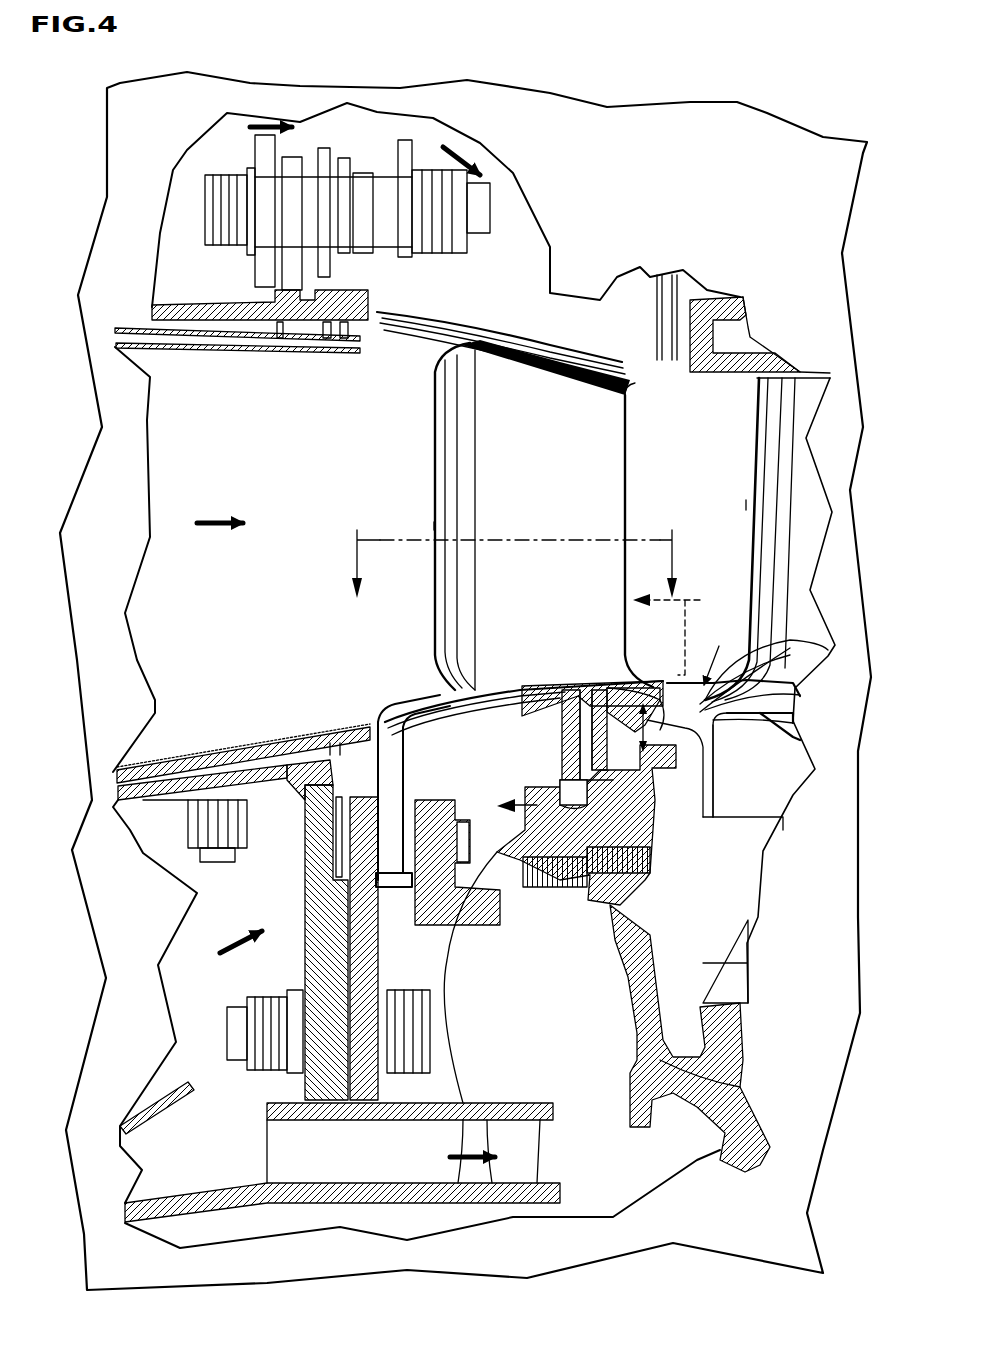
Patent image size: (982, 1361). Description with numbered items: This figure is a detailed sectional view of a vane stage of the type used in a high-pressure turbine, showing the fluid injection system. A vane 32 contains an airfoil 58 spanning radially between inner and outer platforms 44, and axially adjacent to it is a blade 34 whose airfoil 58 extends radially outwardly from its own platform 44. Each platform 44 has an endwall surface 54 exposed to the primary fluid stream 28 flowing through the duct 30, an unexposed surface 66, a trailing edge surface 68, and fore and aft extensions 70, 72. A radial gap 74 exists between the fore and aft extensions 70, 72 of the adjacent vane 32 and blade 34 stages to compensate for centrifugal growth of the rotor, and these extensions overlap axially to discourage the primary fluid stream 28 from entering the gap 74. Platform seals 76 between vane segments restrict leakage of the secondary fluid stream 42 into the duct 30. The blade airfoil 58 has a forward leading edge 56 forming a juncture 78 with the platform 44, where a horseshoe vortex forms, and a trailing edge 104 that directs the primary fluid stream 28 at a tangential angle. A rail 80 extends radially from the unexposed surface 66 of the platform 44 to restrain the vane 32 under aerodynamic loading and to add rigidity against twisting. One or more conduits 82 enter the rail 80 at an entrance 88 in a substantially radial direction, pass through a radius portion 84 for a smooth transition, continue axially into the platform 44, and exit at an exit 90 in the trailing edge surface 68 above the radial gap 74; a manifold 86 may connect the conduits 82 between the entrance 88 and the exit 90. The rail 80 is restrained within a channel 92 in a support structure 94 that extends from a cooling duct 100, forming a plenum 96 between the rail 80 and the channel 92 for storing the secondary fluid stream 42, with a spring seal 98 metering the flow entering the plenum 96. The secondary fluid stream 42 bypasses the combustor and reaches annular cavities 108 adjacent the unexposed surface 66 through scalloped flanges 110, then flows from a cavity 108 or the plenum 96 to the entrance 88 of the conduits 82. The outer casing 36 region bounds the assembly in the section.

The primary fluid stream 28 is at (228, 518).
The duct 30 is at (724, 536).
The vane 32 is at (418, 449).
The blade 34 is at (726, 432).
The outer casing 36 is at (708, 190).
The secondary fluid stream 42 is at (273, 123).
The platform 44 is at (513, 333).
The endwall surface 54 is at (491, 365).
The leading edge 56 is at (434, 522).
The airfoil 58 is at (553, 495).
The unexposed surface 66 is at (477, 323).
The trailing edge surface 68 is at (700, 727).
The fore extension 70 is at (327, 683).
The aft extension 72 is at (645, 664).
The radial gap 74 is at (653, 727).
The platform seal 76 is at (643, 330).
The juncture 78 is at (767, 648).
The rail 80 is at (560, 770).
The conduit 82 is at (635, 676).
The radius portion 84 is at (602, 683).
The manifold 86 is at (588, 687).
The entrance 88 is at (600, 810).
The exit 90 is at (663, 676).
The channel 92 is at (573, 827).
The support structure 94 is at (568, 875).
The plenum 96 is at (580, 805).
The spring seal 98 is at (543, 773).
The cooling duct 100 is at (456, 1053).
The trailing edge 104 is at (635, 493).
The annular cavity 108 is at (525, 270).
The scalloped flange 110 is at (392, 875).